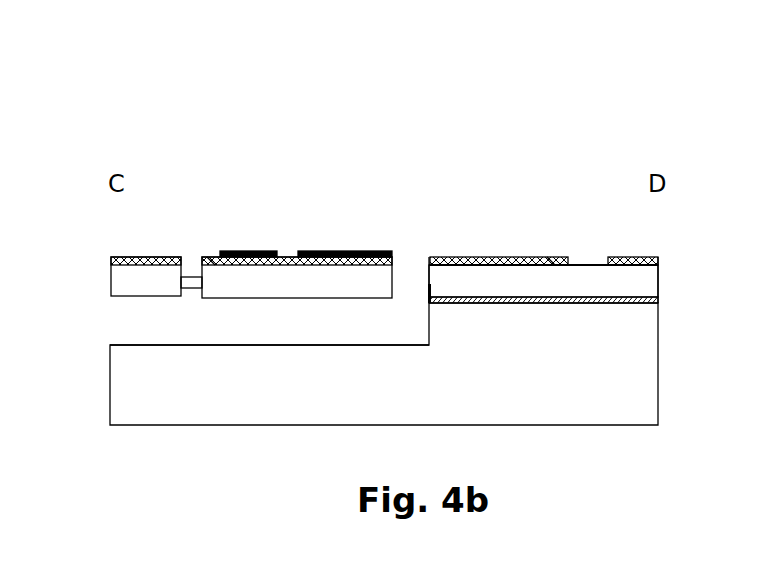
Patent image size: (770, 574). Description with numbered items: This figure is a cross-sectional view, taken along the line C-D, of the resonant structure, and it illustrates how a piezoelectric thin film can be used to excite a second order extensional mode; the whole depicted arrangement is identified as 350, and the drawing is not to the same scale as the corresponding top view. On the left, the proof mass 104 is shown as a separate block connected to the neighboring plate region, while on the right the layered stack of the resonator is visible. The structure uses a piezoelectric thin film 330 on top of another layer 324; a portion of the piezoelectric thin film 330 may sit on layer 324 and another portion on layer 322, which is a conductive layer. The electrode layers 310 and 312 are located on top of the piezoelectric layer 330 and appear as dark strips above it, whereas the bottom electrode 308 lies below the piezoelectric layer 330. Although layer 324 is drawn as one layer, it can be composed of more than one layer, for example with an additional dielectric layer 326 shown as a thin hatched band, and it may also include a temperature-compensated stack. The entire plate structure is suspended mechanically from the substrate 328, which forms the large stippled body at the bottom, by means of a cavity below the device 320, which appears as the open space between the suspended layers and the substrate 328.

The sensor assembly 350 is at (628, 88).
The proof mass 104 is at (110, 278).
The piezoelectric thin film 330 is at (207, 257).
The electrode layer 310 is at (241, 251).
The electrode layer 312 is at (316, 251).
The conductive layer 322 is at (393, 257).
The bottom electrode 308 is at (598, 264).
The layer 324 is at (660, 276).
The additional dielectric layer 326 is at (660, 300).
The substrate 328 is at (645, 403).
The cavity below the device 320 is at (269, 332).